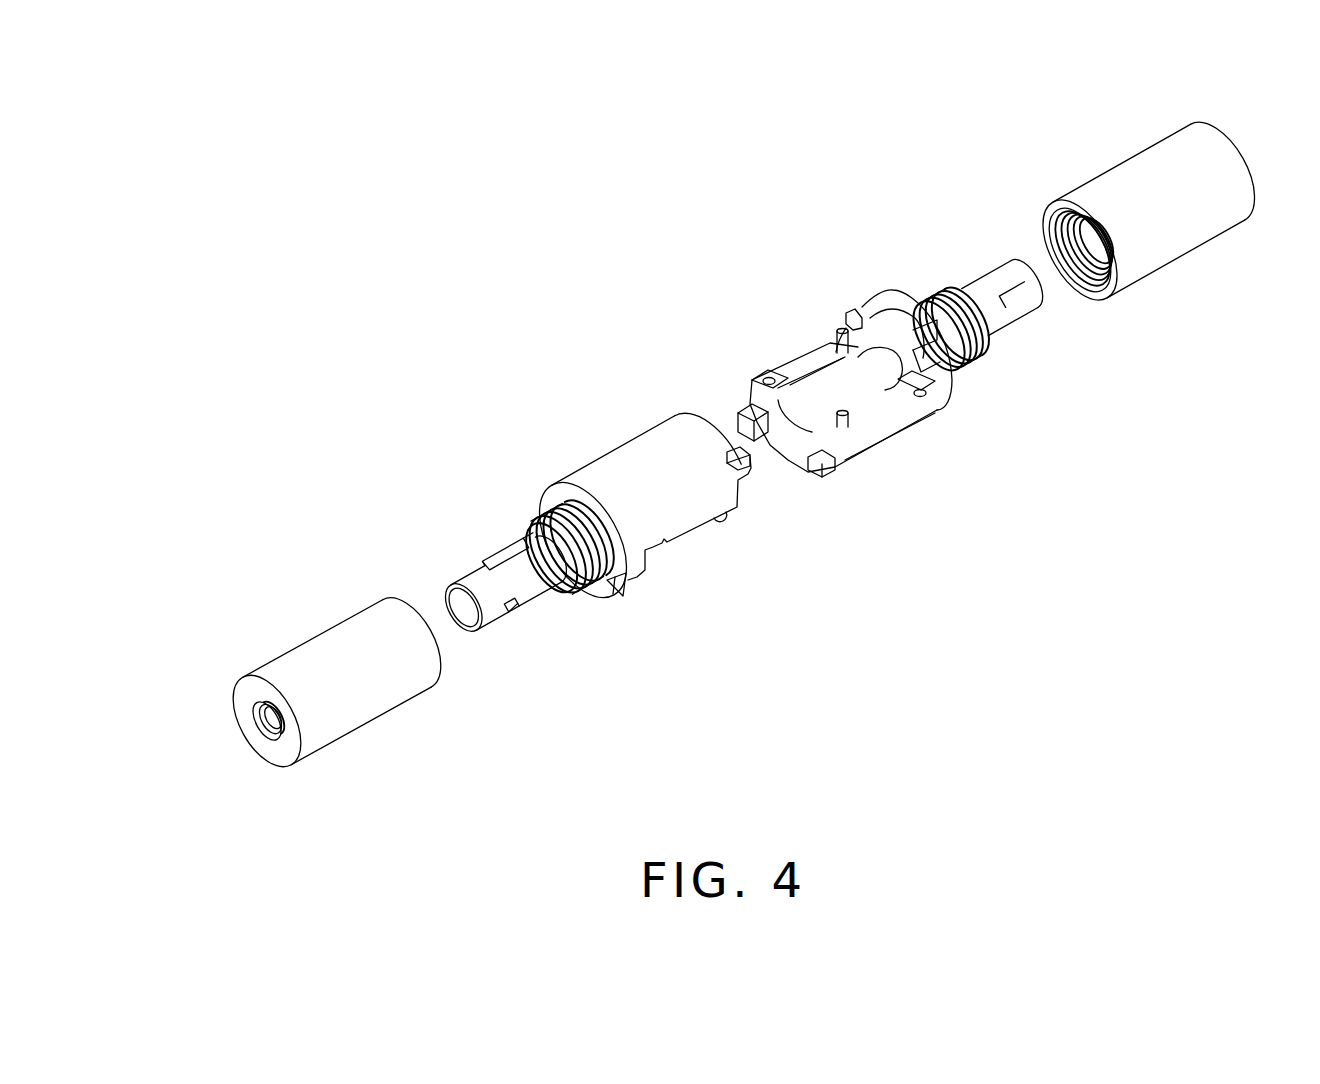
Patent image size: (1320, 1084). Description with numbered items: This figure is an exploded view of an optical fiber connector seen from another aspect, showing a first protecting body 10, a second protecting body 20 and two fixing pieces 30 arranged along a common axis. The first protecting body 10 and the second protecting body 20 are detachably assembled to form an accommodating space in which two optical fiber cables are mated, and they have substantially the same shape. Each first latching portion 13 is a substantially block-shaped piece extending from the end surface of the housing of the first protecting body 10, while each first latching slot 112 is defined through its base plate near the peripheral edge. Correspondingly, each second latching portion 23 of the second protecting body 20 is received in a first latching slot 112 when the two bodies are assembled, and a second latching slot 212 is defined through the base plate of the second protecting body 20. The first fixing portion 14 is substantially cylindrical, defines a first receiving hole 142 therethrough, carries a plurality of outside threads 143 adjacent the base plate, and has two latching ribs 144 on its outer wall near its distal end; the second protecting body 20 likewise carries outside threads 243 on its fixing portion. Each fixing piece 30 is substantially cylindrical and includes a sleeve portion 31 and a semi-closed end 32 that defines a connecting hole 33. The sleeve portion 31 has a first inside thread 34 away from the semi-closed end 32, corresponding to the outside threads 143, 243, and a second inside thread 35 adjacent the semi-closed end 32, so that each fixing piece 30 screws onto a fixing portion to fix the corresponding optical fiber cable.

The first protecting body 10 is at (644, 505).
The first latching slot 112 is at (626, 584).
The first latching portion 13 is at (728, 452).
The first fixing portion 14 is at (520, 521).
The first receiving hole 142 is at (486, 592).
The outside threads 143 is at (535, 513).
The latching rib 144 is at (512, 607).
The second protecting body 20 is at (899, 352).
The second latching slot 212 is at (935, 358).
The second latching portion 23 is at (823, 467).
The outside threads 243 is at (927, 300).
The fixing piece 30 is at (724, 498).
The sleeve portion 31 is at (408, 683).
The semi-closed end 32 is at (287, 752).
The connecting hole 33 is at (258, 722).
The first inside thread 34 is at (1097, 290).
The second inside thread 35 is at (270, 733).